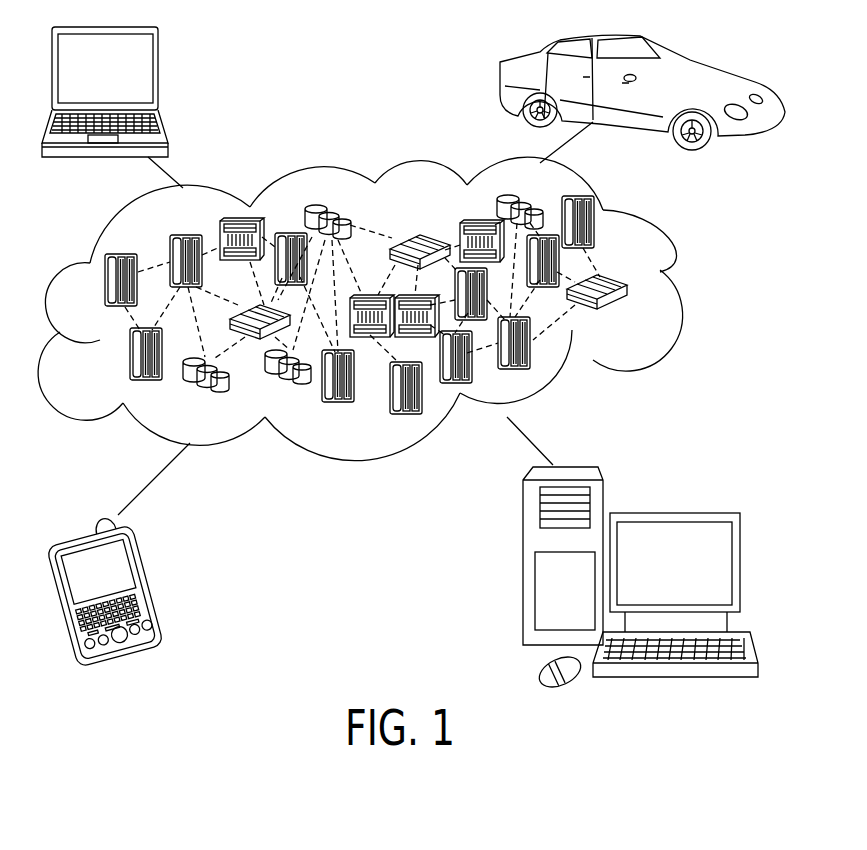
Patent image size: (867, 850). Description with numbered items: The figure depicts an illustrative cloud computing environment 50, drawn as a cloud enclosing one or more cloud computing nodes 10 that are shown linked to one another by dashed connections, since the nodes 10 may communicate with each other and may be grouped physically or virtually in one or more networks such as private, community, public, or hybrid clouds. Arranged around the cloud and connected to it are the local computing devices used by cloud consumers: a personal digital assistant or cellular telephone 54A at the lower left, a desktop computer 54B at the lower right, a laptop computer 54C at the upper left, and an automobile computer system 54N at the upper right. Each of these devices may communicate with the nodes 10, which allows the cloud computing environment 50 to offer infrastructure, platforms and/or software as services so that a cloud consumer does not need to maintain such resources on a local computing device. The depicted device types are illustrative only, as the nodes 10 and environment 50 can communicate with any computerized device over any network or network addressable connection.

The cloud computing node 10 is at (655, 311).
The cloud computing environment 50 is at (662, 272).
The personal digital assistant or cellular telephone 54A is at (152, 583).
The desktop computer 54B is at (673, 512).
The laptop computer 54C is at (158, 78).
The automobile computer system 54N is at (503, 92).